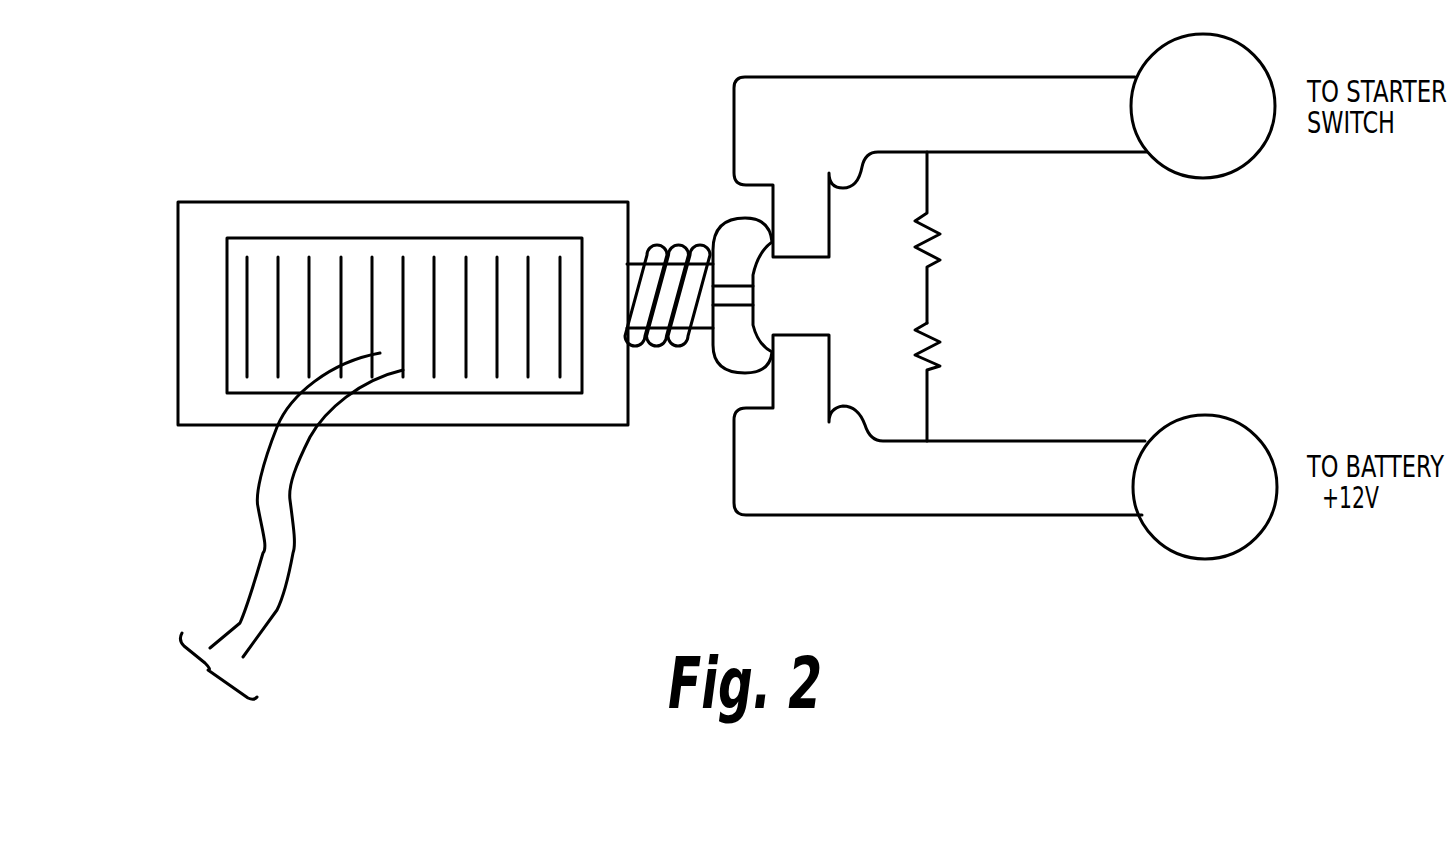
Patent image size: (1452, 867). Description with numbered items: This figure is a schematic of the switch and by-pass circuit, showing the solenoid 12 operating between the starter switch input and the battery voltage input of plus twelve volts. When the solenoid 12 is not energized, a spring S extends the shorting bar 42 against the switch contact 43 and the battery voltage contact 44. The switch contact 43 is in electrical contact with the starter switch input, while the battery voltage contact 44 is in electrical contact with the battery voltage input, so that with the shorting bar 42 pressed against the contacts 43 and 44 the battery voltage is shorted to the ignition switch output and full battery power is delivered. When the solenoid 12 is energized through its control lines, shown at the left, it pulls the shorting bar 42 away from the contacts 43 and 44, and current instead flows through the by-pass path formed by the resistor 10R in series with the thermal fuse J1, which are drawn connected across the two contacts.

The solenoid 12 is at (297, 202).
The shorting bar 42 is at (727, 218).
The switch contact 43 is at (830, 222).
The battery voltage contact 44 is at (830, 375).
The spring S is at (690, 340).
The resistor 10R is at (955, 237).
The thermal fuse J1 is at (949, 382).